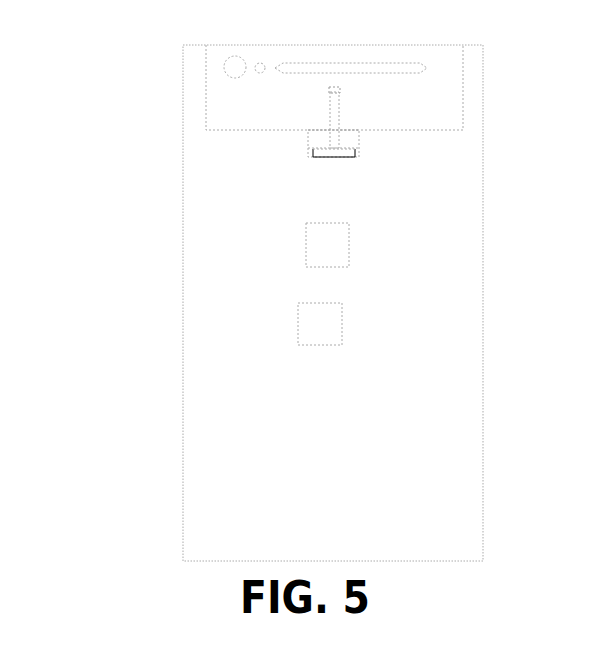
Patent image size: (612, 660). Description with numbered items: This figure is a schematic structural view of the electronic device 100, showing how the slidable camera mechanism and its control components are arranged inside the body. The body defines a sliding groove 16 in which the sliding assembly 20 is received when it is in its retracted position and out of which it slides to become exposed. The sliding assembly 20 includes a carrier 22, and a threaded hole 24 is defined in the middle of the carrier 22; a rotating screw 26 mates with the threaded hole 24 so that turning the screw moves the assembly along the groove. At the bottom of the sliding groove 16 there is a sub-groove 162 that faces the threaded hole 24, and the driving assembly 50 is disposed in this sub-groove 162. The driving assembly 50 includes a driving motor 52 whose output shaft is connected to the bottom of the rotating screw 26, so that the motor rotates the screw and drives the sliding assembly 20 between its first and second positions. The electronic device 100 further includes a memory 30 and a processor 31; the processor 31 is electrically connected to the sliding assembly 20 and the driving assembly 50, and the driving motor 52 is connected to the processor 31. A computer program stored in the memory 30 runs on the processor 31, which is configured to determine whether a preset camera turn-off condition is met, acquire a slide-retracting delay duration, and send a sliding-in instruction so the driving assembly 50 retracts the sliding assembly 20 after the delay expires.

The electronic device 100 is at (90, 161).
The sliding groove 16 is at (205, 128).
The sub-groove 162 is at (350, 138).
The sliding assembly 20 is at (430, 47).
The carrier 22 is at (445, 68).
The threaded hole 24 is at (340, 89).
The rotating screw 26 is at (340, 103).
The driving assembly 50 is at (343, 153).
The driving motor 52 is at (333, 150).
The memory 30 is at (320, 330).
The processor 31 is at (328, 251).